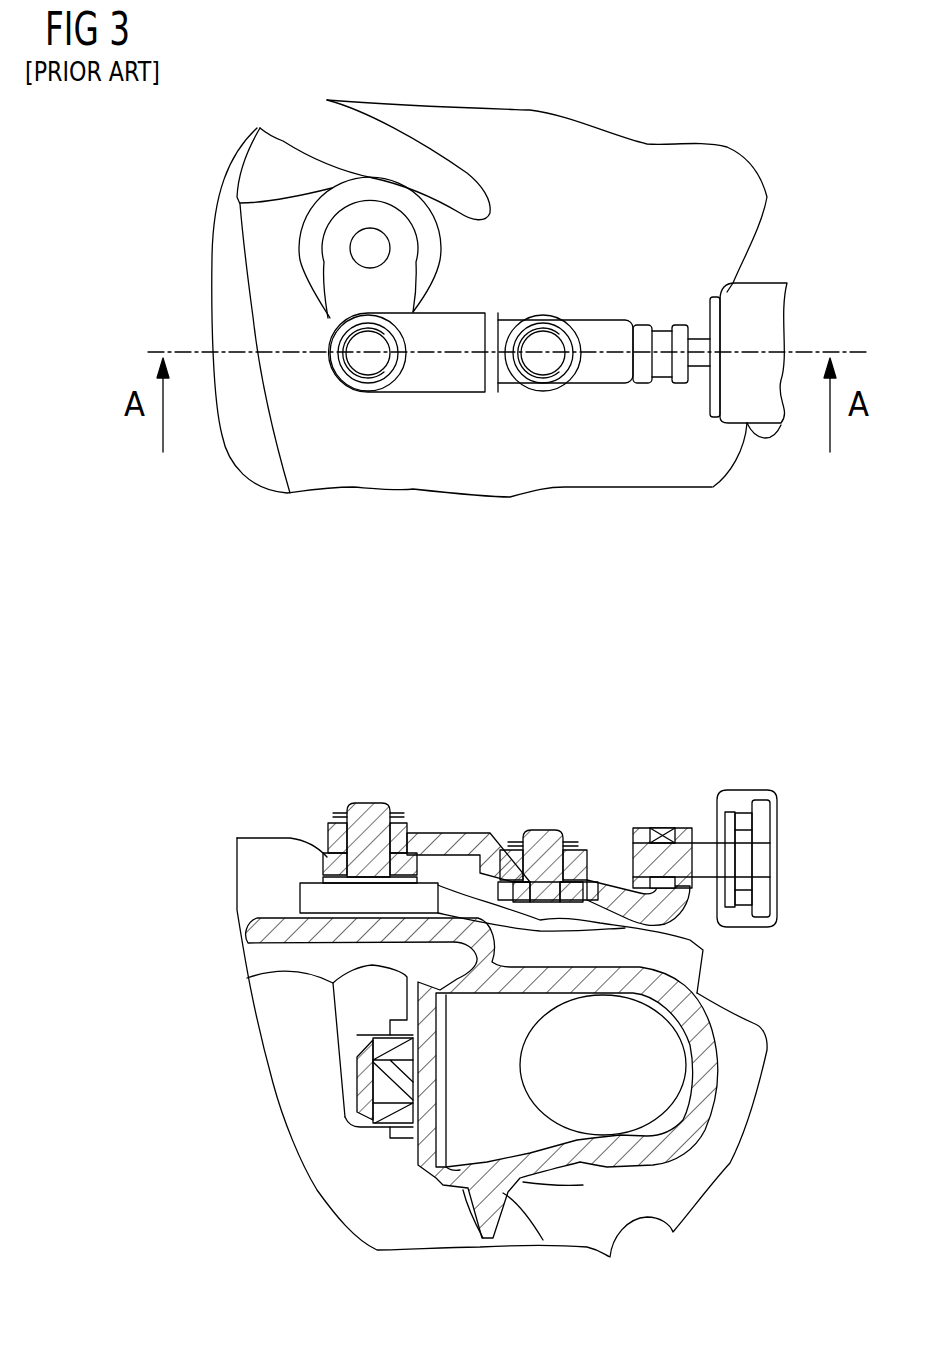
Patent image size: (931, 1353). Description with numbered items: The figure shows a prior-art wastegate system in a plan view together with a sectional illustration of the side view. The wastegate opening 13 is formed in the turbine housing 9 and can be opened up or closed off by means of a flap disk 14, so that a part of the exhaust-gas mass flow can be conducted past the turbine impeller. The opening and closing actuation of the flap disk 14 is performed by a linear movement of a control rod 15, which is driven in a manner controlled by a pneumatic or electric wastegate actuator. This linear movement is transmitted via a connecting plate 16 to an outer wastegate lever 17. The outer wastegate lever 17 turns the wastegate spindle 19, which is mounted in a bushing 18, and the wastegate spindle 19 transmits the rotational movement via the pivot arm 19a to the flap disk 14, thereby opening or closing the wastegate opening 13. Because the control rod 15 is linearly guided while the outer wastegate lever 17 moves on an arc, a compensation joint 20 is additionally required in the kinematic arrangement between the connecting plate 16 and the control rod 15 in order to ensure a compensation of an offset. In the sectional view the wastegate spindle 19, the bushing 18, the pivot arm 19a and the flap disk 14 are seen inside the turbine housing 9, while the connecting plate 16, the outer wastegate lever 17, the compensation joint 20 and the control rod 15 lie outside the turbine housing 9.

The turbine housing 9 is at (693, 1067).
The wastegate opening 13 is at (470, 1087).
The flap disk 14 is at (393, 1088).
The control rod 15 is at (690, 367).
The connecting plate 16 is at (425, 367).
The outer wastegate lever 17 is at (340, 268).
The bushing 18 is at (363, 1005).
The wastegate spindle 19 is at (370, 248).
The pivot arm 19a is at (357, 1062).
The compensation joint 20 is at (543, 360).